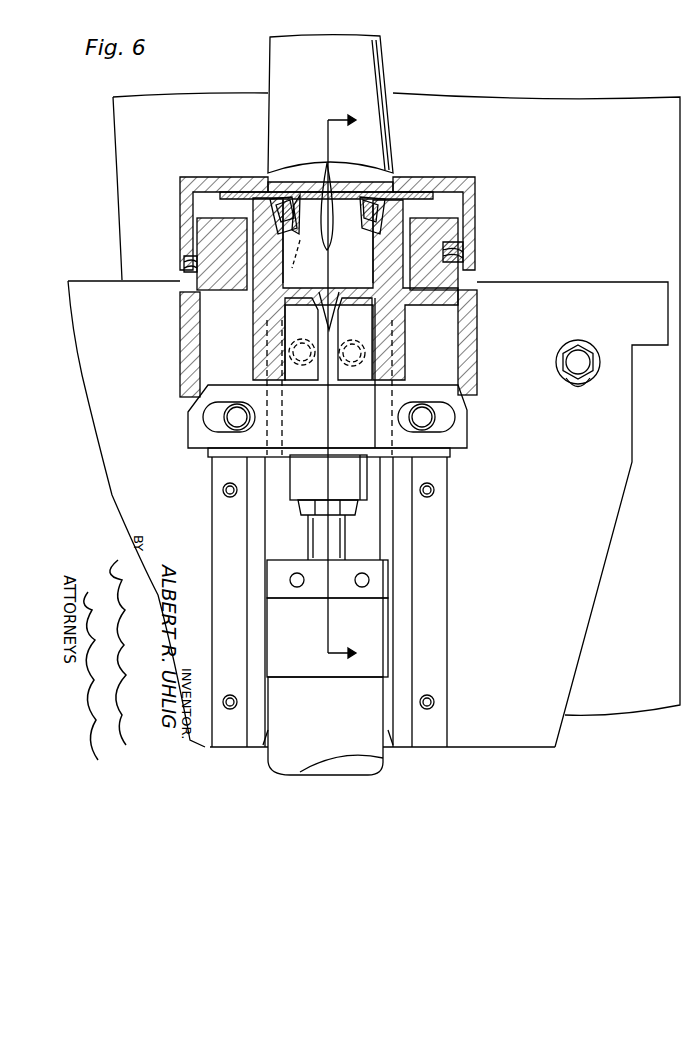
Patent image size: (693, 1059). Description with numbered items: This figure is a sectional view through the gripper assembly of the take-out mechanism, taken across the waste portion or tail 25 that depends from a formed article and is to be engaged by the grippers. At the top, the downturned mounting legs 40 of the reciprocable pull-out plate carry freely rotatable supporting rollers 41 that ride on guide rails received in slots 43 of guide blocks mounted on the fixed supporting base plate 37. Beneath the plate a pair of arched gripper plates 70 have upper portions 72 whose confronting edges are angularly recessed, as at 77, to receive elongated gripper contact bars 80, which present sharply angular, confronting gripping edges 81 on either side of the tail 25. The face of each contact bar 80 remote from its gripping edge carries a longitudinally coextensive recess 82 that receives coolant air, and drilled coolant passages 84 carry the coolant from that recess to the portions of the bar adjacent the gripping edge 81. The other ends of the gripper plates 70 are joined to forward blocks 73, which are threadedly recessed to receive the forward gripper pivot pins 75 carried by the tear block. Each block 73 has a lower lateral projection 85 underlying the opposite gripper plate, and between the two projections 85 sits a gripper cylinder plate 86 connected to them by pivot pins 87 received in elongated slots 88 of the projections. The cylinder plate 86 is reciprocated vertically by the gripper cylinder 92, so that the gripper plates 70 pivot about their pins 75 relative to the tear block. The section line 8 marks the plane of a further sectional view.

The section line / tube 8 is at (330, 351).
The waste portion 25 is at (333, 240).
The supporting base plate 37 is at (185, 368).
The downturned mounting legs 40 is at (190, 190).
The supporting rollers 41 is at (205, 246).
The slots 43 is at (190, 265).
The gripper plates 70 is at (258, 296).
The upper portion of gripper plate 72 is at (405, 216).
The forward blocks 73 is at (292, 331).
The forward gripper pivot pins 75 is at (302, 360).
The angular recess 77 is at (299, 256).
The gripper contact bars 80 is at (362, 203).
The gripping edges 81 is at (302, 196).
The recess 82 is at (270, 200).
The coolant passages 84 is at (360, 195).
The lower lateral projection 85 is at (212, 443).
The gripper cylinder plate 86 is at (275, 457).
The pivot pins 87 is at (232, 420).
The elongated slots 88 is at (208, 415).
The gripper cylinder 92 is at (362, 632).